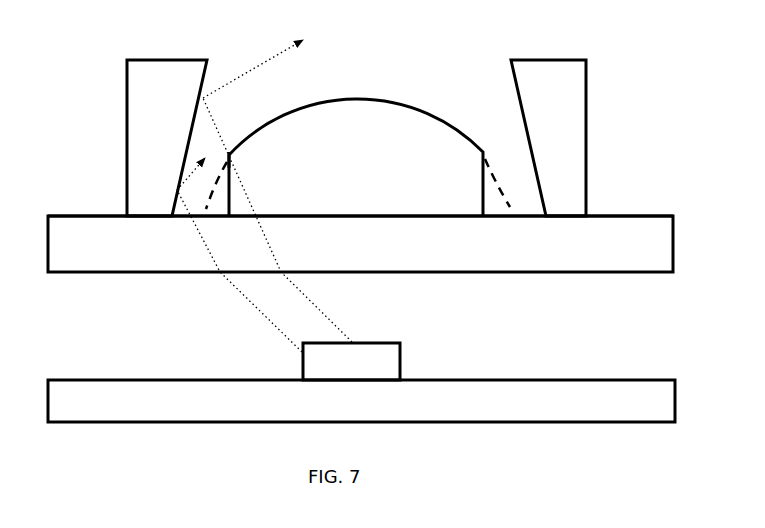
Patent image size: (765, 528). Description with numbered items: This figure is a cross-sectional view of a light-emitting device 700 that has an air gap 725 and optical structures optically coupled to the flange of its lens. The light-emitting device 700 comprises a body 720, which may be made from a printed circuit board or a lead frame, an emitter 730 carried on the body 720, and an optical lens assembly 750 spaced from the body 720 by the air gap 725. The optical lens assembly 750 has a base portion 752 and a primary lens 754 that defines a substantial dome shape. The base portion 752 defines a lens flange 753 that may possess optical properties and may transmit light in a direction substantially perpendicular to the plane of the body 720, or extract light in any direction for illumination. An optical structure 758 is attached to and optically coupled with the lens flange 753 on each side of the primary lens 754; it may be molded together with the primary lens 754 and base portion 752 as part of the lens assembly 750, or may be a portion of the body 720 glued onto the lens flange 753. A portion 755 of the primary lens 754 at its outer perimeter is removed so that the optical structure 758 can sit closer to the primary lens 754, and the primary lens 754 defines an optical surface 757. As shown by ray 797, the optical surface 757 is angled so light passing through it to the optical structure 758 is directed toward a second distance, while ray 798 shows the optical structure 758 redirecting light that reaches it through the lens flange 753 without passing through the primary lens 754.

The light-emitting device 700 is at (81, 28).
The body 720 is at (433, 410).
The air gap 725 is at (516, 352).
The emitter 730 is at (386, 378).
The optical lens assembly 750 is at (563, 310).
The base portion 752 is at (613, 250).
The lens flange 753 is at (98, 212).
The primary lens 754 is at (388, 194).
The portion of primary lens 755 is at (493, 217).
The optical surface 757 is at (234, 162).
The optical structure 758 is at (166, 112).
The ray 797 is at (262, 63).
The ray 798 is at (205, 246).